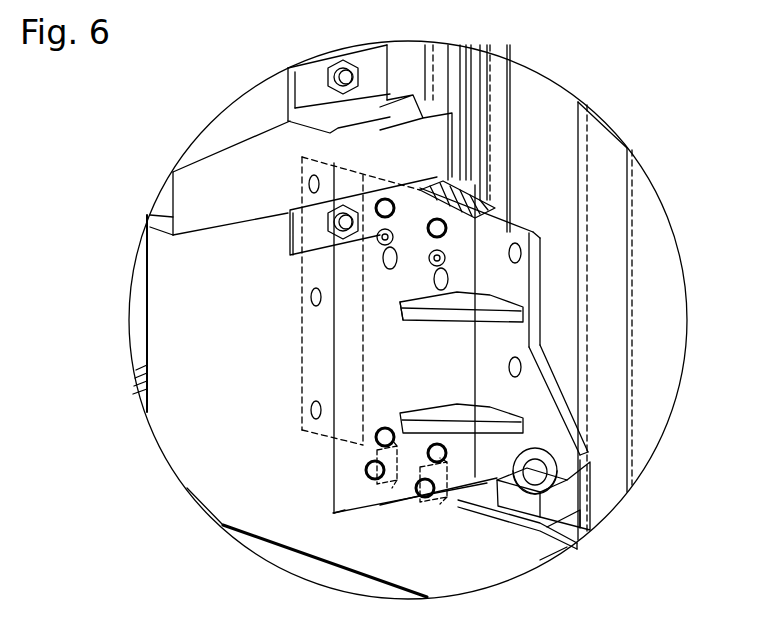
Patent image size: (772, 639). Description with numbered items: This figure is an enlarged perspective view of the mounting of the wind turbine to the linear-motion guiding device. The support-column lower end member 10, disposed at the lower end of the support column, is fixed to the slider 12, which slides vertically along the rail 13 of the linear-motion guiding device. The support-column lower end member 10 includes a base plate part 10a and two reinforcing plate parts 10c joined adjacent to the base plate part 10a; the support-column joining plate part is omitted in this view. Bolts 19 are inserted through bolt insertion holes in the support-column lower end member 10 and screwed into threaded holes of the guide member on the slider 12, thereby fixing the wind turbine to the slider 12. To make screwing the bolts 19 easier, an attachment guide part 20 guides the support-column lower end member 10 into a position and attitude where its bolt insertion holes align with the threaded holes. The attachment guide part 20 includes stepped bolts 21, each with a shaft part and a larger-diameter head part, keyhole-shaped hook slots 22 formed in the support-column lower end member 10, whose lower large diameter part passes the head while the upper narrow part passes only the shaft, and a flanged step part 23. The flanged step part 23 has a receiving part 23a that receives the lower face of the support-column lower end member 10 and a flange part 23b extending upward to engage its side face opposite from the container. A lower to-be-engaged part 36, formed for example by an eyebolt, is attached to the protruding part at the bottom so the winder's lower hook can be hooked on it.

The support-column lower end member 10 is at (548, 328).
The base plate part 10a is at (407, 382).
The reinforcing plate parts 10c is at (437, 317).
The slider 12 is at (492, 184).
The rail 13 is at (480, 80).
The bolts 19 is at (435, 219).
The attachment guide part 20 is at (326, 222).
The stepped bolts 21 is at (447, 257).
The hook slots 22 is at (447, 284).
The flanged step part 23 is at (545, 476).
The receiving part 23a is at (440, 494).
The flange part 23b is at (460, 497).
The lower to-be-engaged part 36 is at (522, 455).